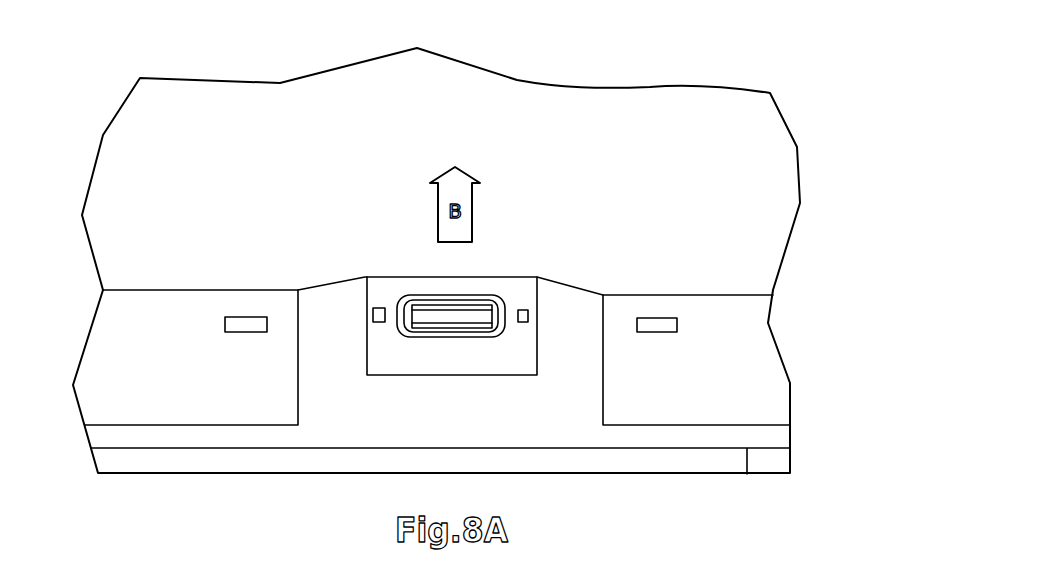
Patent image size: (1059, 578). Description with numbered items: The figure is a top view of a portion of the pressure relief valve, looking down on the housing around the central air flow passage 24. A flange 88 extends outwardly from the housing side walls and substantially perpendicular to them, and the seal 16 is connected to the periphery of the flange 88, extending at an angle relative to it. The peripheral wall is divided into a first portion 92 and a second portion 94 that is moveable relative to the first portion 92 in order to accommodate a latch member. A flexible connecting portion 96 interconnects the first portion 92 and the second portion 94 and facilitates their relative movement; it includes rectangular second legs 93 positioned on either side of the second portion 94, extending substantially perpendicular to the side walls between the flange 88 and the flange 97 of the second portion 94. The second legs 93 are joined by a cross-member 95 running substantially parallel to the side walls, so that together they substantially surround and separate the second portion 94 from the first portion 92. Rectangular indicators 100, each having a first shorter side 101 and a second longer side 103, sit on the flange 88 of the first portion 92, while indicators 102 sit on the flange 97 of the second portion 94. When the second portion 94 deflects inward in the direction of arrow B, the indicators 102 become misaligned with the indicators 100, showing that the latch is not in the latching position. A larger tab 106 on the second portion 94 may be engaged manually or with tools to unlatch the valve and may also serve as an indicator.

The seal 16 is at (702, 462).
The central air flow passage 24 is at (618, 153).
The flange 88 is at (722, 387).
The first portion 92 is at (210, 377).
The second legs 93 is at (333, 333).
The second portion 94 is at (500, 372).
The cross-member 95 is at (468, 408).
The connecting portion 96 is at (407, 410).
The flange of the second portion 97 is at (443, 358).
The indicator 100 is at (242, 302).
The first shorter side 101 is at (225, 323).
The indicator 102 is at (375, 306).
The second longer side 103 is at (245, 335).
The larger tab 106 is at (472, 318).